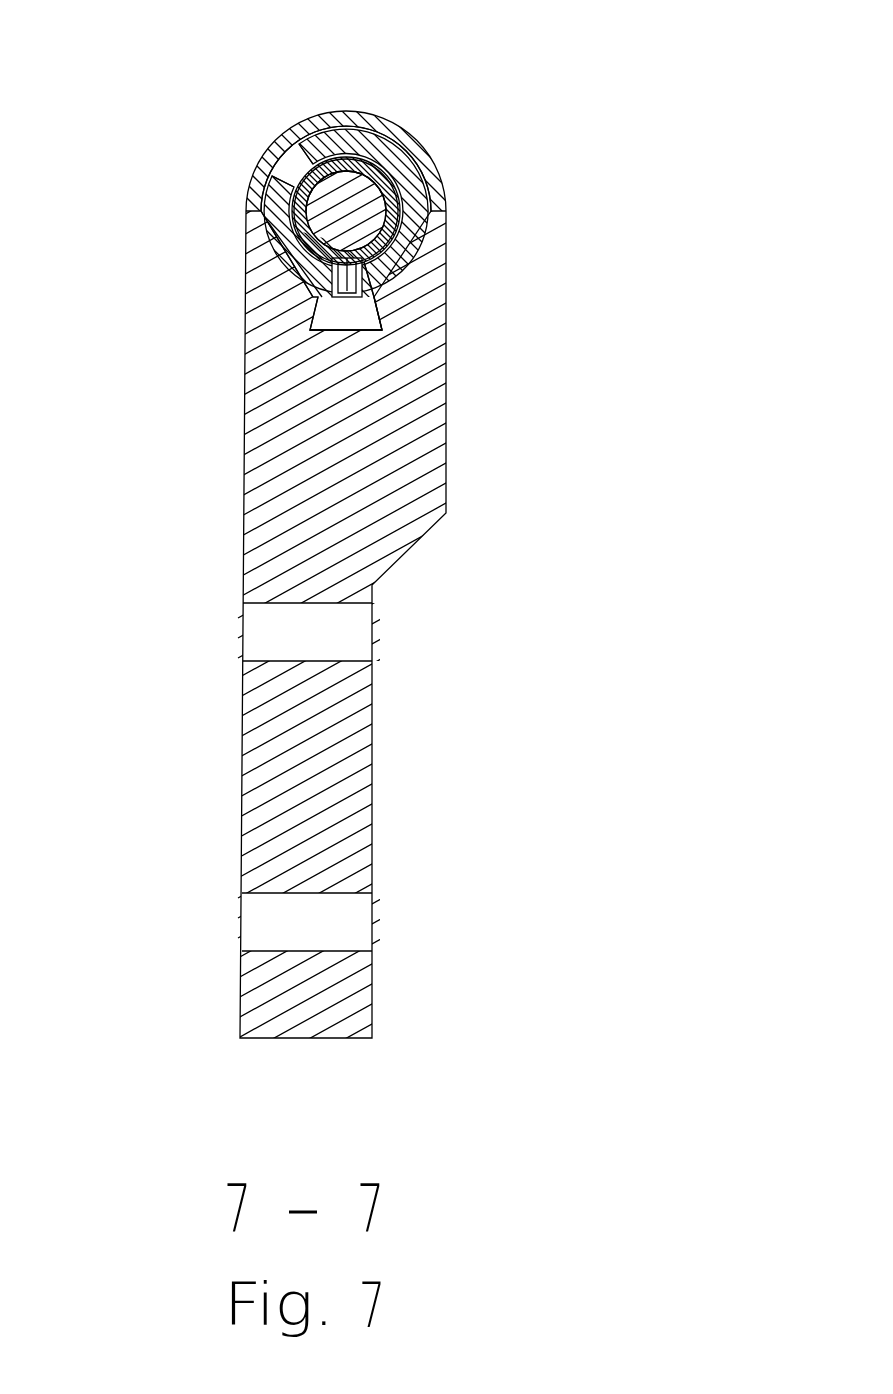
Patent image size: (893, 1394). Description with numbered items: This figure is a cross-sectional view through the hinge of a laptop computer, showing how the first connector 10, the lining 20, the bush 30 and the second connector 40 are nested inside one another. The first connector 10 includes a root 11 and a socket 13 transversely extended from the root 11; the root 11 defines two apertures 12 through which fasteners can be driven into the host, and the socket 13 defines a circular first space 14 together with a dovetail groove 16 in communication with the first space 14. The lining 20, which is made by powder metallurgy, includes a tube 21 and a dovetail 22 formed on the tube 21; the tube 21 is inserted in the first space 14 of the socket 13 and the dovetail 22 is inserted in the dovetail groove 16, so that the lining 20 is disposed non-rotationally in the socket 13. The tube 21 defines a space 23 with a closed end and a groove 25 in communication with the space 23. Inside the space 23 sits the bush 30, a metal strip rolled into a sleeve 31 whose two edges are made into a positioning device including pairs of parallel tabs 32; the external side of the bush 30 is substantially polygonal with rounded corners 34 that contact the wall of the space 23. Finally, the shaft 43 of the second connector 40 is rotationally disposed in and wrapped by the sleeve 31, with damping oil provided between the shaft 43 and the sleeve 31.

The first connector 10 is at (319, 630).
The root 11 is at (340, 780).
The apertures 12 is at (340, 628).
The socket 13 is at (356, 108).
The first space 14 is at (442, 197).
The dovetail groove 16 is at (380, 306).
The lining 20 is at (338, 152).
The tube 21 is at (268, 245).
The dovetail 22 is at (302, 322).
The space 23 is at (312, 158).
The groove 25 is at (372, 330).
The bush 30 is at (380, 184).
The sleeve 31 is at (400, 264).
The tabs 32 is at (336, 280).
The corners 34 is at (280, 173).
The second connector 40 is at (392, 180).
The shaft 43 is at (368, 218).